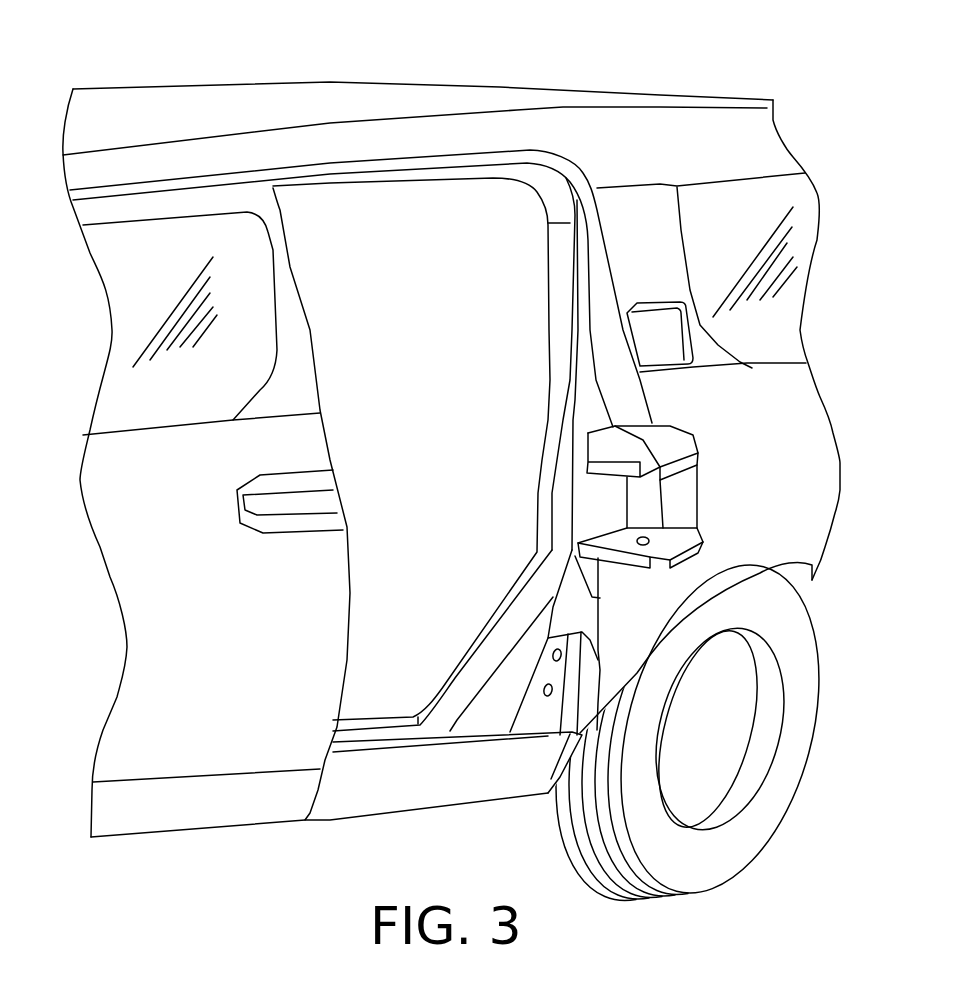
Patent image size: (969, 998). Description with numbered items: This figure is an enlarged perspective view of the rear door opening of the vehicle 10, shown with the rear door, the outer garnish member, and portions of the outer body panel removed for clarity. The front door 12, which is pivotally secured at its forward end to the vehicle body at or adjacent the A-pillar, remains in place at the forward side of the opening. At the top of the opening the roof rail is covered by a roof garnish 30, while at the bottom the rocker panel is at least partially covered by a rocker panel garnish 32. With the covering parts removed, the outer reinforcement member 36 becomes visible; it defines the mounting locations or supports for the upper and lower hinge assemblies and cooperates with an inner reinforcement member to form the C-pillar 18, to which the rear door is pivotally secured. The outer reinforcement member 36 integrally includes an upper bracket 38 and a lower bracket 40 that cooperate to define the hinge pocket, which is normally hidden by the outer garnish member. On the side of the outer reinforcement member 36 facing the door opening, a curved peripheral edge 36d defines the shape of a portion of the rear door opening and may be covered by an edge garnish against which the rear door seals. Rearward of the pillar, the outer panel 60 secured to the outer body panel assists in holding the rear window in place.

The vehicle 10 is at (224, 70).
The front door 12 is at (128, 577).
The C-pillar 18 is at (518, 338).
The roof garnish 30 is at (512, 130).
The rocker panel garnish 32 is at (428, 797).
The outer reinforcement member 36 is at (565, 493).
The curved peripheral edge 36d is at (532, 568).
The upper bracket 38 is at (672, 445).
The lower bracket 40 is at (672, 543).
The outer panel 60 is at (665, 245).